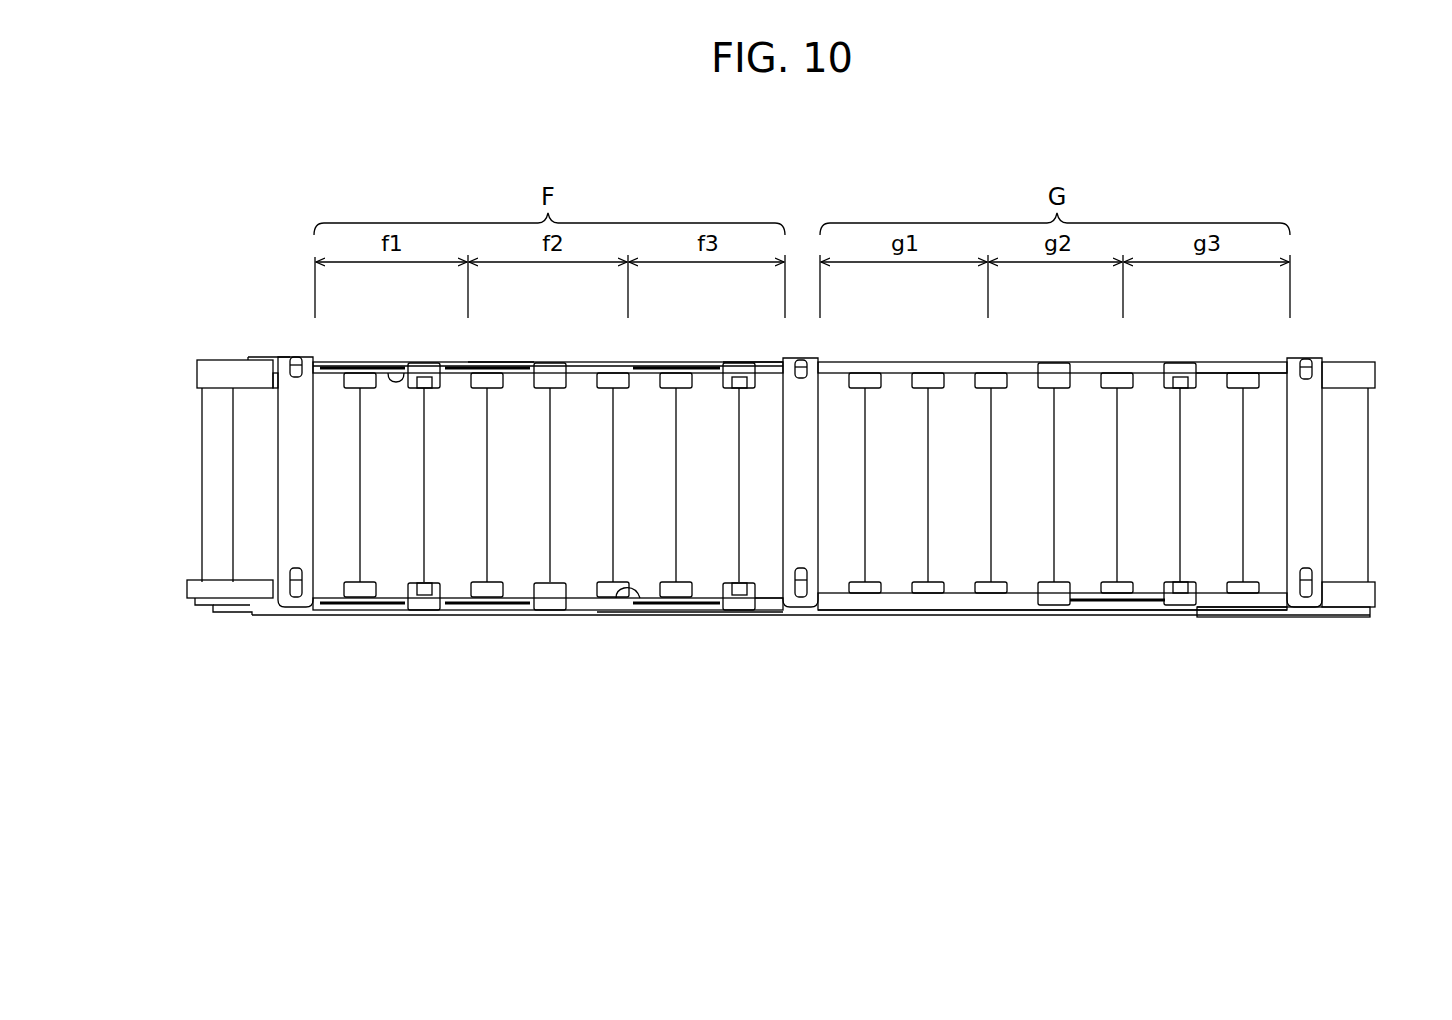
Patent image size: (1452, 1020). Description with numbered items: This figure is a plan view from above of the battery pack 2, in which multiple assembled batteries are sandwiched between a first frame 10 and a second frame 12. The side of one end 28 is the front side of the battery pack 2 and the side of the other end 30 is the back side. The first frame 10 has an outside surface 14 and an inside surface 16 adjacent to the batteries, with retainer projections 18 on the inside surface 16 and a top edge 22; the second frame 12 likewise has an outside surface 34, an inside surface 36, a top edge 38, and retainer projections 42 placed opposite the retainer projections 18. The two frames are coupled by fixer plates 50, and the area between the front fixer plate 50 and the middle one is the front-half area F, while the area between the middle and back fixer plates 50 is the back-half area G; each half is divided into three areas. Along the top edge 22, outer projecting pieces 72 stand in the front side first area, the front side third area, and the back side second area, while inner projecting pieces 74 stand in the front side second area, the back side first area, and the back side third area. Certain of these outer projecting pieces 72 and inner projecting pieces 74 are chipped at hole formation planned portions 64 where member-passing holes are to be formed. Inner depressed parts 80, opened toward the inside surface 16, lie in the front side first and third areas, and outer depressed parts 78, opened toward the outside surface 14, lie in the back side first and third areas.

The battery pack 2 is at (1366, 228).
The first frame 10 is at (270, 357).
The second frame 12 is at (268, 617).
The outside surface 14 is at (490, 362).
The inside surface 16 is at (398, 362).
The retainer projections 18 is at (752, 362).
The top edge 22 is at (1250, 362).
The one end 28 is at (203, 502).
The other end 30 is at (1370, 497).
The outside surface 34 is at (640, 617).
The inside surface 36 is at (640, 585).
The top edge 38 is at (1250, 617).
The retainer projections 42 is at (737, 598).
The fixer plates 50 is at (292, 437).
The hole formation planned portions 64 is at (428, 363).
The outer projecting pieces 72 is at (378, 364).
The inner projecting pieces 74 is at (515, 369).
The outer depressed parts 78 is at (936, 373).
The inner depressed parts 80 is at (340, 363).